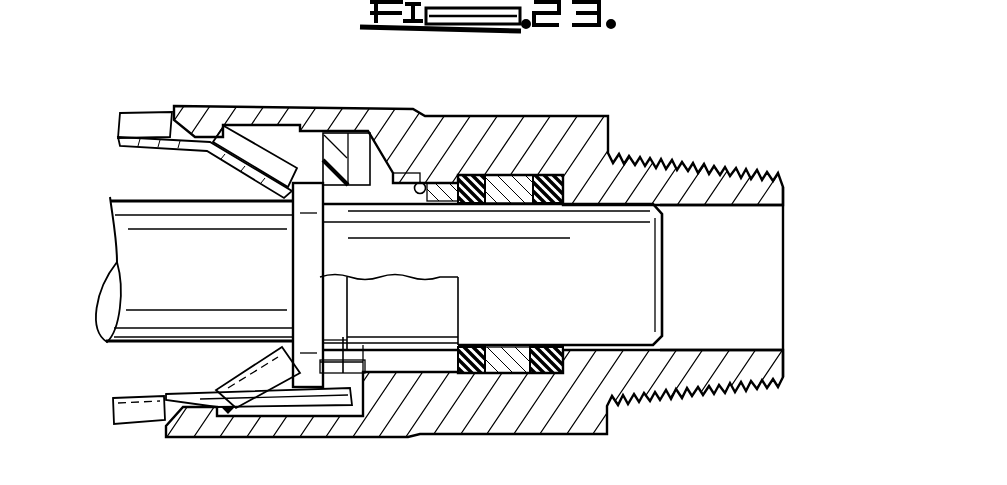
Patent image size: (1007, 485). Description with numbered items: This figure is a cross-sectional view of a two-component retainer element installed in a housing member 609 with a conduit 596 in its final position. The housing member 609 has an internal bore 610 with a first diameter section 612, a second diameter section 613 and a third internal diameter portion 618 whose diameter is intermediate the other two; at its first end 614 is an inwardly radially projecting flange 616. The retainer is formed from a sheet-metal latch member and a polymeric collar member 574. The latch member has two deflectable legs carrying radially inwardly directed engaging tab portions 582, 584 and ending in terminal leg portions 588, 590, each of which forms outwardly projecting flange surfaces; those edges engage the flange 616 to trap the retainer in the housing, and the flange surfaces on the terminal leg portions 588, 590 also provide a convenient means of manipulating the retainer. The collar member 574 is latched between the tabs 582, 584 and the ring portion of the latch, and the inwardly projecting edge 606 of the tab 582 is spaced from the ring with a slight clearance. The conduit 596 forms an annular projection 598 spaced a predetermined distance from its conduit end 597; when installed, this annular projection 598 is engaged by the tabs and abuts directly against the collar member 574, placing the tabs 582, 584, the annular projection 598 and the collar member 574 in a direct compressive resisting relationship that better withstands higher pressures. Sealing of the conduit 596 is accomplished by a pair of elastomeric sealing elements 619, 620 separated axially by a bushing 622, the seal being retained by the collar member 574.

The collar member 574 is at (424, 348).
The engaging tab portion 582 is at (285, 130).
The engaging tab portion 584 is at (247, 366).
The terminal leg portion 588 is at (112, 424).
The terminal leg portion 590 is at (116, 133).
The conduit 596 is at (127, 200).
The conduit end 597 is at (658, 285).
The annular projection 598 is at (312, 174).
The inwardly projecting edge 606 is at (370, 415).
The housing member 609 is at (578, 446).
The internal bore 610 is at (424, 182).
The first diameter section 612 is at (257, 128).
The second diameter section 613 is at (700, 200).
The first end 614 is at (168, 405).
The inwardly radially projecting flange 616 is at (200, 144).
The third internal diameter portion 618 is at (470, 184).
The elastomeric sealing element 619 is at (481, 376).
The elastomeric sealing element 620 is at (552, 367).
The bushing 622 is at (553, 180).